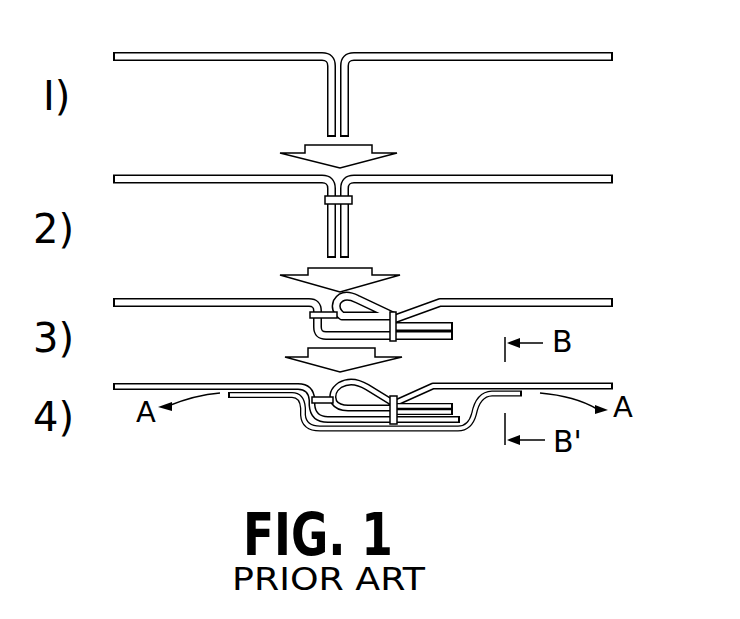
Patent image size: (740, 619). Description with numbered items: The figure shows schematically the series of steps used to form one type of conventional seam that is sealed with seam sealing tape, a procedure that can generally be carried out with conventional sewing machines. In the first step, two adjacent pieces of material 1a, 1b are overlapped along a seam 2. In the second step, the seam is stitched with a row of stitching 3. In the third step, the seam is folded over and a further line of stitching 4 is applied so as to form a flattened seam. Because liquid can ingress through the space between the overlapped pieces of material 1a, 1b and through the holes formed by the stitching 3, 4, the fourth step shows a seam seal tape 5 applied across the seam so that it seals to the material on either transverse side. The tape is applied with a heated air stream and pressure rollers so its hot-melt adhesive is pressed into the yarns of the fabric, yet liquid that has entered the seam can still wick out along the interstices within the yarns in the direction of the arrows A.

The piece of material 1a is at (210, 52).
The piece of material 1b is at (472, 52).
The seam 2 is at (350, 100).
The row of stitching 3 is at (352, 200).
The further line of stitching 4 is at (393, 311).
The seam seal tape 5 is at (265, 398).